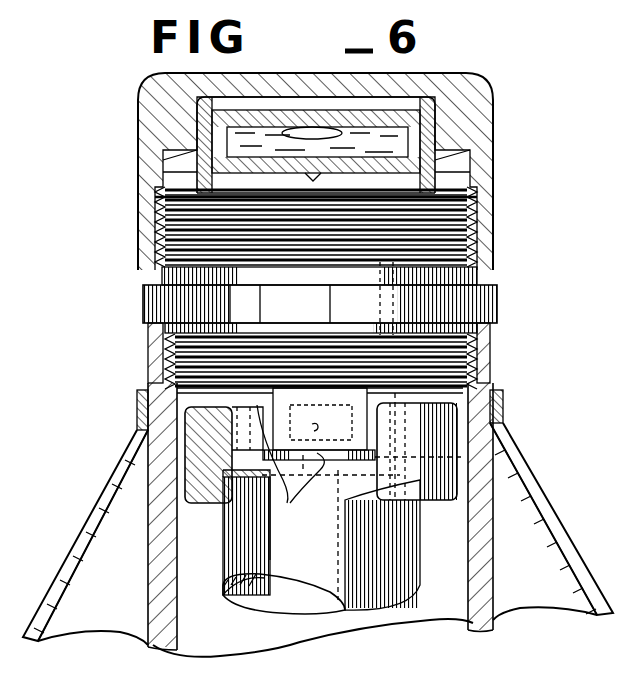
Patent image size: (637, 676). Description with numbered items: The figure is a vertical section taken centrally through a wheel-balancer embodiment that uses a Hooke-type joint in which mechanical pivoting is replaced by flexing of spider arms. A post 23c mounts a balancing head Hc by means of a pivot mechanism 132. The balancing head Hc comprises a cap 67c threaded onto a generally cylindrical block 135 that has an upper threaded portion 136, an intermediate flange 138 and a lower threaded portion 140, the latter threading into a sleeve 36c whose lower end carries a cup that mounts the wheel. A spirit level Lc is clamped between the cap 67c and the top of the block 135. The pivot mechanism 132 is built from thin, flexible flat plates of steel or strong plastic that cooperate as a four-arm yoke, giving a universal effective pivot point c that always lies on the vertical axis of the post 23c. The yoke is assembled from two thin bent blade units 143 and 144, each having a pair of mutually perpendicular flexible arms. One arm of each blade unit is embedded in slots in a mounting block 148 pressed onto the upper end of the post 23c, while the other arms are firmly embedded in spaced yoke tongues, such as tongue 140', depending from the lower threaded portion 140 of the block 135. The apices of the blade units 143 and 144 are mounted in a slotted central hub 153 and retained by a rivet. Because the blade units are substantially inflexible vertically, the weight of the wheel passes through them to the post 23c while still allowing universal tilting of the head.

The spirit level Lc is at (374, 112).
The balancing head Hc is at (502, 102).
The cap 67c is at (486, 138).
The upper threaded portion 136 is at (474, 193).
The cylindrical block 135 is at (478, 271).
The intermediate flange 138 is at (488, 299).
The lower threaded portion 140 is at (352, 356).
The blade unit 144 is at (462, 408).
The pivot mechanism 132 is at (470, 433).
The mounting block 148 is at (440, 488).
The blade unit 143 is at (202, 425).
The sleeve 36c is at (158, 603).
The post 23c is at (240, 610).
The central hub 153 is at (321, 507).
The yoke tongue 140' is at (324, 444).
The universal effective pivot point c is at (305, 422).